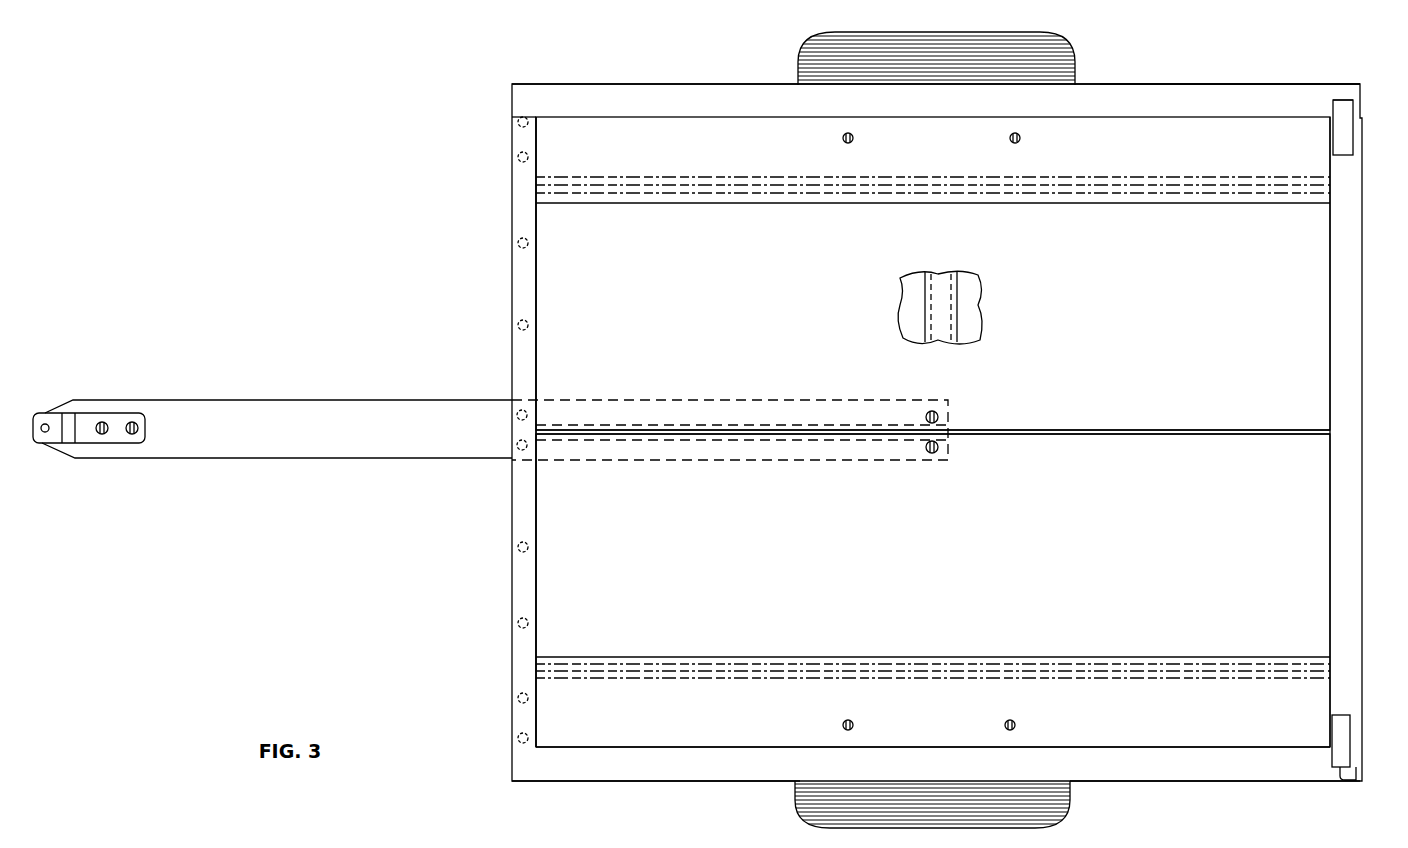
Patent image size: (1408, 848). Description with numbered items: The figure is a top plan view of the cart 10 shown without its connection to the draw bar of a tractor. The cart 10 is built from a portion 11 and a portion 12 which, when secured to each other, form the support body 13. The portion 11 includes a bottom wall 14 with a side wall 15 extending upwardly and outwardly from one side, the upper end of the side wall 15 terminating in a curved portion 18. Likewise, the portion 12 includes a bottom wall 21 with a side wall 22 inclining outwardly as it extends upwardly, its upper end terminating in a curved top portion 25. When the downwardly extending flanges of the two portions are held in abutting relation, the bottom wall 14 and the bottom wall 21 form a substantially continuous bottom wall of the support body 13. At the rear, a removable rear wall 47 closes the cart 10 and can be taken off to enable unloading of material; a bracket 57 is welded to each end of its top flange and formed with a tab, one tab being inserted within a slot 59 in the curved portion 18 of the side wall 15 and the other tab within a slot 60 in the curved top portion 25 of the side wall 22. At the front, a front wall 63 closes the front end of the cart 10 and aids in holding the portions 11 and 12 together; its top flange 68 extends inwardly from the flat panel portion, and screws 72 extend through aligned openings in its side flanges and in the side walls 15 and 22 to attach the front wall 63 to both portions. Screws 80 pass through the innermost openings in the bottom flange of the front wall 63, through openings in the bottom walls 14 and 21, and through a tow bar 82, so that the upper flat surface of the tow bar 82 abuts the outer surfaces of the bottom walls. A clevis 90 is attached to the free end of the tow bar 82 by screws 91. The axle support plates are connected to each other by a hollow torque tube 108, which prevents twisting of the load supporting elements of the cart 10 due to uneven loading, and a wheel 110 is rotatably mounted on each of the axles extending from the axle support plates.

The cart 10 is at (482, 608).
The portion 11 is at (713, 80).
The portion 12 is at (670, 782).
The support body 13 is at (745, 782).
The bottom wall 14 is at (1150, 331).
The side wall 15 is at (800, 172).
The curved portion 18 is at (1249, 102).
The bottom wall 21 is at (1095, 596).
The side wall 22 is at (783, 688).
The curved top portion 25 is at (1175, 770).
The rear wall 47 is at (1330, 628).
The bracket 57 is at (1353, 140).
The slot 59 is at (1350, 100).
The slot 60 is at (1357, 775).
The front wall 63 is at (510, 545).
The top flange 68 is at (527, 590).
The screws 72 is at (528, 126).
The screws 80 is at (515, 414).
The tow bar 82 is at (400, 462).
The clevis 90 is at (87, 407).
The screws 91 is at (132, 420).
The torque tube 108 is at (960, 312).
The wheel 110 is at (1065, 48).